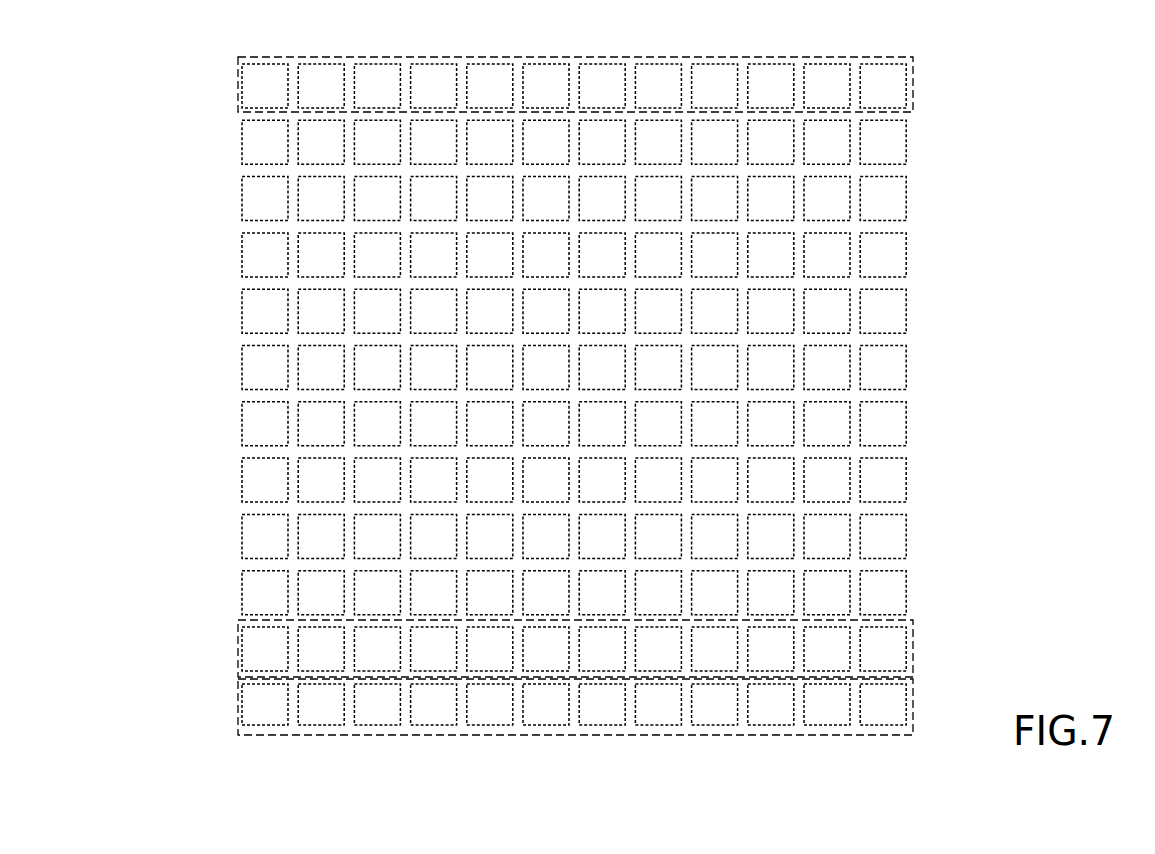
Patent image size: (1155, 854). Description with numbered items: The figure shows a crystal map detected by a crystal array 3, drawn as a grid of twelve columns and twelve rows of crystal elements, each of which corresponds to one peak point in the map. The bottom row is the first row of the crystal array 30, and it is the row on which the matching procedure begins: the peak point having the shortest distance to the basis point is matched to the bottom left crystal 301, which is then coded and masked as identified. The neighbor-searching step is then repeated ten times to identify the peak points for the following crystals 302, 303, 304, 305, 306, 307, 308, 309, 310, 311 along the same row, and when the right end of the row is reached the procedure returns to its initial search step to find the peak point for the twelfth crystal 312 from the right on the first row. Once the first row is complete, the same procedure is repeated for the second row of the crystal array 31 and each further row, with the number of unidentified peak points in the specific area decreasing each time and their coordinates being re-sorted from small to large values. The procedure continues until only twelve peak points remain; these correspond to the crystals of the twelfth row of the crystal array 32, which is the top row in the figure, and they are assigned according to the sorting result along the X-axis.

The crystal array 3 is at (496, 414).
The first row of the crystal array 30 is at (545, 725).
The second row of the crystal array 31 is at (238, 655).
The twelfth row of the crystal array 32 is at (238, 100).
The first crystal of the first row 301 is at (248, 716).
The second crystal of the first row 302 is at (304, 716).
The third crystal of the first row 303 is at (360, 716).
The fourth crystal of the first row 304 is at (451, 716).
The fifth crystal of the first row 305 is at (507, 716).
The sixth crystal of the first row 306 is at (529, 716).
The seventh crystal of the first row 307 is at (585, 716).
The eighth crystal of the first row 308 is at (641, 716).
The ninth crystal of the first row 309 is at (732, 716).
The tenth crystal of the first row 310 is at (788, 716).
The eleventh crystal of the first row 311 is at (810, 716).
The twelfth crystal of the first row 312 is at (866, 716).